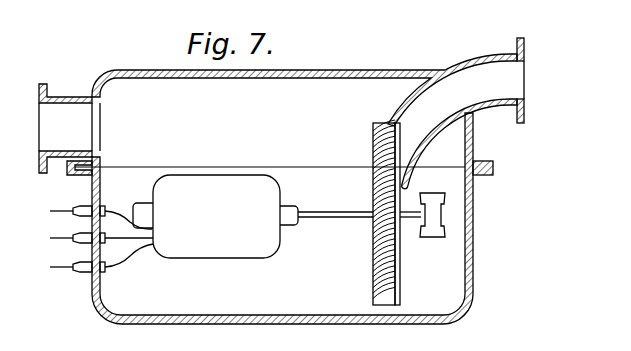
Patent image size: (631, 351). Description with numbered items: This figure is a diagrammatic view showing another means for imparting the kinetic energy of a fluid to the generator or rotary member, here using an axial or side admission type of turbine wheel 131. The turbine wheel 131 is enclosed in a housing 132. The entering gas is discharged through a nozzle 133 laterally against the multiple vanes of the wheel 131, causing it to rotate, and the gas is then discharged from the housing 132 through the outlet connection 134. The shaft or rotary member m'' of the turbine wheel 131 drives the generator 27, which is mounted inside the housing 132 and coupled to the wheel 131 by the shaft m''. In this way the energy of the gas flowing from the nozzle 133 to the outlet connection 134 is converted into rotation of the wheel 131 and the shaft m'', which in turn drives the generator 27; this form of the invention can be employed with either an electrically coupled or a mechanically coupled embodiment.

The generator 27 is at (228, 248).
The turbine wheel 131 is at (372, 145).
The housing 132 is at (378, 69).
The nozzle 133 is at (417, 101).
The outlet connection 134 is at (68, 98).
The shaft or rotary member m'' is at (371, 203).